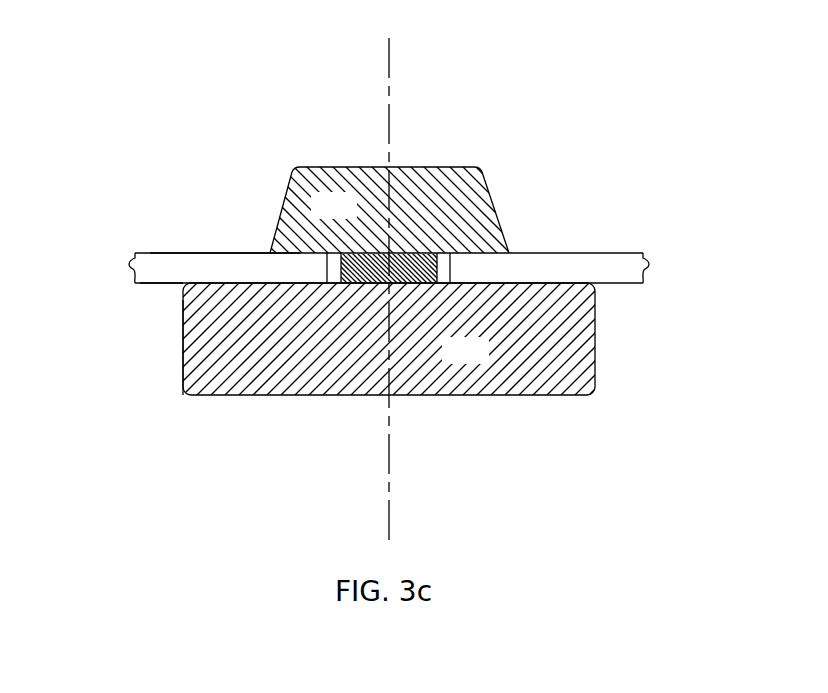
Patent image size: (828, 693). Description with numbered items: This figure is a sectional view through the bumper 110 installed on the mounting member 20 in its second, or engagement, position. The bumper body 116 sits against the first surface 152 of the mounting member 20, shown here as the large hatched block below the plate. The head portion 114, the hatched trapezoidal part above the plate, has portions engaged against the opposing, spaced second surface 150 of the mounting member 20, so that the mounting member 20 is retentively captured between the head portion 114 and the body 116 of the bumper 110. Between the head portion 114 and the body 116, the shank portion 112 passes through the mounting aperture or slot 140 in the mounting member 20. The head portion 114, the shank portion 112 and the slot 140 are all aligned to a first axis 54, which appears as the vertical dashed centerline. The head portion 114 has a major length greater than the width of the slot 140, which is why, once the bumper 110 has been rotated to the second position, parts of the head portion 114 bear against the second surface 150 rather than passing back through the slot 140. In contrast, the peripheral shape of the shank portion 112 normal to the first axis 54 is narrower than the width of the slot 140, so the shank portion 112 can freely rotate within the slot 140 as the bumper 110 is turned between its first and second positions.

The first axis 54 is at (388, 71).
The mounting member 20 is at (170, 263).
The second surface 150 is at (199, 258).
The first surface 152 is at (153, 281).
The slot 140 is at (332, 268).
The shank portion 112 is at (412, 262).
The head portion 114 is at (355, 216).
The bumper body 116 is at (486, 361).
The bumper 110 is at (163, 411).